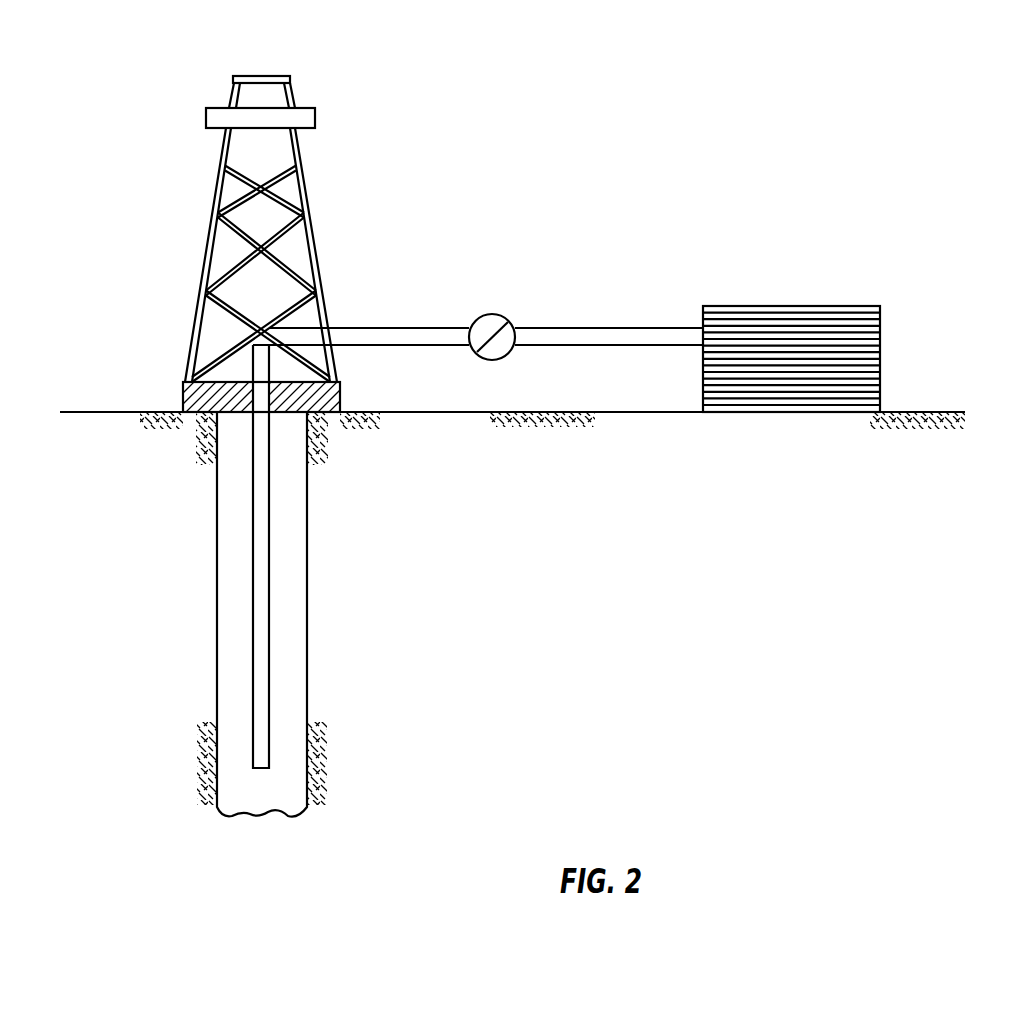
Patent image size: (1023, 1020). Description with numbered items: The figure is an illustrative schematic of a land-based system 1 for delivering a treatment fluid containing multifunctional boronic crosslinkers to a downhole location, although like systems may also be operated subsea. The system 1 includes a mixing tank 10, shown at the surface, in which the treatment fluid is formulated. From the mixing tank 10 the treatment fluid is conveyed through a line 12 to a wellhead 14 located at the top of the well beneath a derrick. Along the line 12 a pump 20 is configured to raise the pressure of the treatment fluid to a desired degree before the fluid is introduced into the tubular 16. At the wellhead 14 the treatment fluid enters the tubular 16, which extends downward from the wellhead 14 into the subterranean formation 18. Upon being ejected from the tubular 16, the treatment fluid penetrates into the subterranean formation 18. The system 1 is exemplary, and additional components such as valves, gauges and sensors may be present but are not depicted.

The system 1 is at (64, 110).
The mixing tank 10 is at (870, 306).
The line 12 is at (400, 328).
The wellhead 14 is at (183, 395).
The tubular 16 is at (272, 534).
The subterranean formation 18 is at (140, 629).
The pump 20 is at (505, 320).